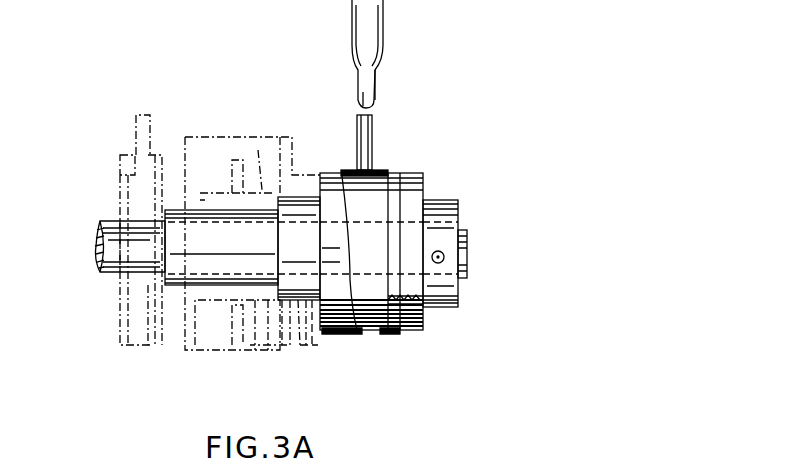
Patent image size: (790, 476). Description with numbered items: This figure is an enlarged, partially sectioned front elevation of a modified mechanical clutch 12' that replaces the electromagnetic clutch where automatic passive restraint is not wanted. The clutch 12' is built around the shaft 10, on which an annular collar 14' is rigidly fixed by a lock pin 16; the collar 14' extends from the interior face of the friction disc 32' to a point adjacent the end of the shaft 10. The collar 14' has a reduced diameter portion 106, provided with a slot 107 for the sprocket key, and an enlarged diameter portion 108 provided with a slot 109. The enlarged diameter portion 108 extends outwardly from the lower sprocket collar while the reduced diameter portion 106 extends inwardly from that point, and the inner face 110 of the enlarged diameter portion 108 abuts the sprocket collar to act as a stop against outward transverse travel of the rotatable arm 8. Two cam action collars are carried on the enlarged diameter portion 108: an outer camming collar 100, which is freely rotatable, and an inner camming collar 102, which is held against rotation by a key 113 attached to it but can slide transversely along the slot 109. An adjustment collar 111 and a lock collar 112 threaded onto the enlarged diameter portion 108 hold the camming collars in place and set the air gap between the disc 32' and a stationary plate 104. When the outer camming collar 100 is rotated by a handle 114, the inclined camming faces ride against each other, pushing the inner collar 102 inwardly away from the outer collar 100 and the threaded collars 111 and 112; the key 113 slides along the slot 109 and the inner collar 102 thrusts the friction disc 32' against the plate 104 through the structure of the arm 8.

The shaft 10 is at (90, 258).
The rotatable arm 8 is at (295, 135).
The slot 107 is at (280, 131).
The stationary plate 104 is at (128, 155).
The friction disc 32' is at (157, 219).
The reduced diameter portion 106 is at (172, 330).
The outer camming collar 100 is at (386, 172).
The mechanical clutch 12' is at (390, 143).
The handle 114 is at (378, 42).
The enlarged diameter portion 108 is at (438, 203).
The annular collar 14' is at (491, 234).
The lock pin 16 is at (445, 257).
The lock collar 112 is at (421, 320).
The adjustment collar 111 is at (390, 332).
The inner camming collar 102 is at (358, 332).
The key 113 is at (312, 335).
The slot 109 is at (290, 340).
The inner face 110 is at (250, 358).